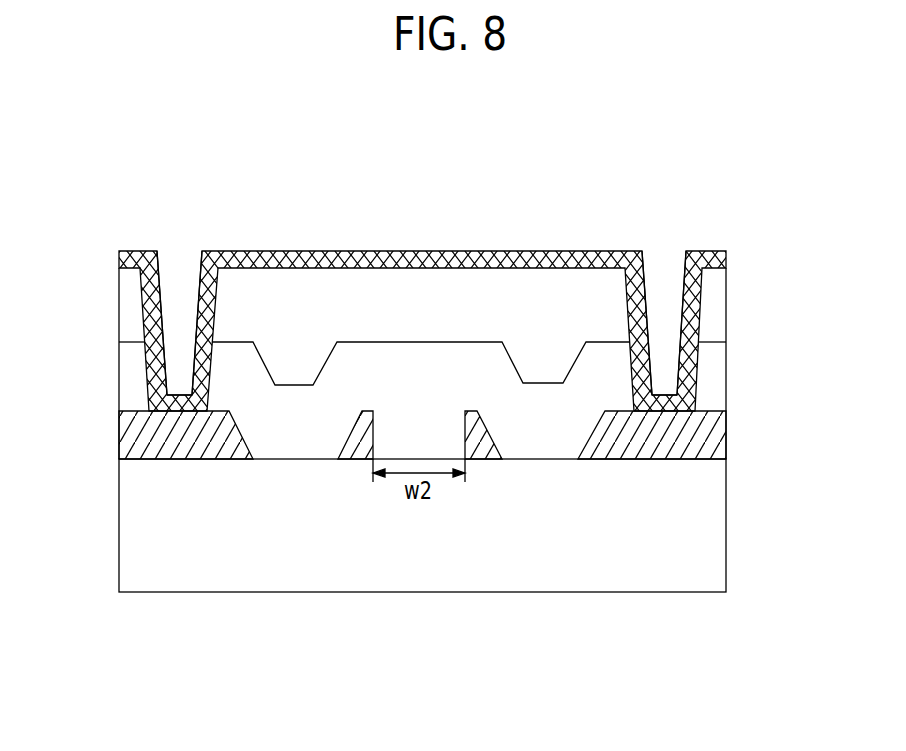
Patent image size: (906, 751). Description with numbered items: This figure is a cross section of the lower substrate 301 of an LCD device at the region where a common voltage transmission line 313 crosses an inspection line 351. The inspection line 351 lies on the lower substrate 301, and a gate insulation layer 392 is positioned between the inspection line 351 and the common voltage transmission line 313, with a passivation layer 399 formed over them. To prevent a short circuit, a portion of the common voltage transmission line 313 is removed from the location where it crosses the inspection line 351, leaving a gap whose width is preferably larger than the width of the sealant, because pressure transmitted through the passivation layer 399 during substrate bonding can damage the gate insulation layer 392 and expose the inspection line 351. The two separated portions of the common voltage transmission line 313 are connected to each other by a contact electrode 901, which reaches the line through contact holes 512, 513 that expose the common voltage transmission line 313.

The lower substrate 301 is at (719, 510).
The common voltage transmission line 313 is at (120, 438).
The inspection line 351 is at (358, 458).
The gate insulation layer 392 is at (719, 377).
The passivation layer 399 is at (500, 290).
The contact electrode 901 is at (358, 250).
The contact hole 512 is at (180, 270).
The contact hole 513 is at (658, 270).